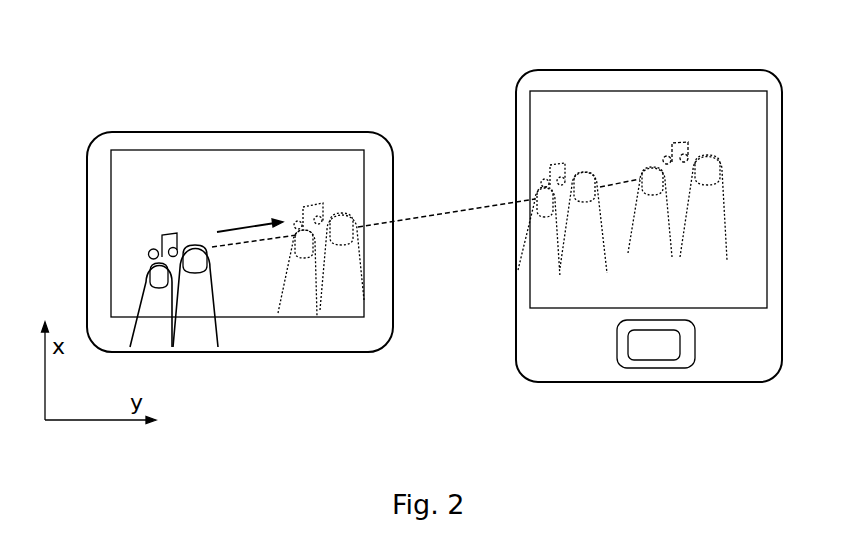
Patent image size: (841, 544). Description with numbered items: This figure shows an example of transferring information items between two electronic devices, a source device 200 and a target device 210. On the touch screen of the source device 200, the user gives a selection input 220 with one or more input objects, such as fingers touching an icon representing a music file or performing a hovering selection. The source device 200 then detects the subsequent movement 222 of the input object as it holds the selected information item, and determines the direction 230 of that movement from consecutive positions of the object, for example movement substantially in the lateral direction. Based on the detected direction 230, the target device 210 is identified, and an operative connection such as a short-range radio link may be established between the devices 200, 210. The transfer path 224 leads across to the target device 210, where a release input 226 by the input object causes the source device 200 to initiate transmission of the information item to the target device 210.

The source device 200 is at (195, 138).
The target device 210 is at (633, 78).
The selection input 220 is at (175, 360).
The subsequent movement 222 is at (302, 332).
The transfer path to second device 224 is at (507, 264).
The release input 226 is at (661, 262).
The direction 230 is at (217, 232).